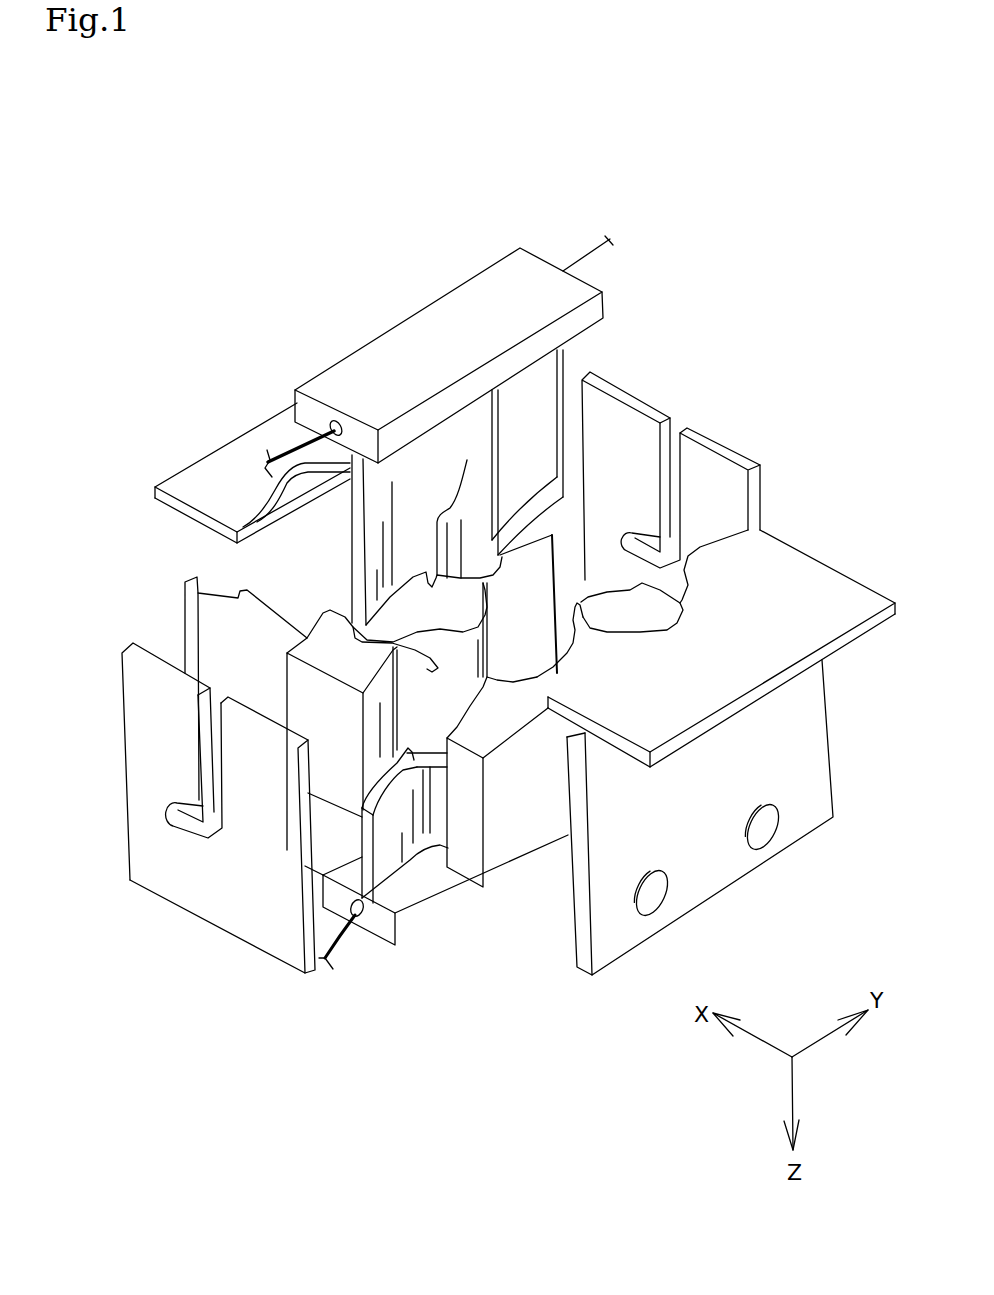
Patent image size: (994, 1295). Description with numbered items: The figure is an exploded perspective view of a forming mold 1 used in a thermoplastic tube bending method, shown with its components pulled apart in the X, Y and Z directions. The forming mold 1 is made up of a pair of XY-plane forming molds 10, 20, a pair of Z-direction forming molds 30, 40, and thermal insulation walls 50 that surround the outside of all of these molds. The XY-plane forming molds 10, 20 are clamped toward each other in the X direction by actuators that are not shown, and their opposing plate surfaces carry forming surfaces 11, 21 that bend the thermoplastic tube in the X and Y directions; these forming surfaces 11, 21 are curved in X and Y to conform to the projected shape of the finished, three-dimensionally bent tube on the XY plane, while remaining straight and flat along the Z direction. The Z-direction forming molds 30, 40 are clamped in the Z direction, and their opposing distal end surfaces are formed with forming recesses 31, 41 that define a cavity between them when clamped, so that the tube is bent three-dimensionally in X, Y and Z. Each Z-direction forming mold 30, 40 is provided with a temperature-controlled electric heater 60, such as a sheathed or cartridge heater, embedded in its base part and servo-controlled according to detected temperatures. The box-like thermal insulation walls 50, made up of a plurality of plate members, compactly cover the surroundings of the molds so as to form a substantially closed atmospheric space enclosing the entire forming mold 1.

The forming mold 1 is at (146, 389).
The XY-plane forming mold 10 is at (313, 704).
The forming surface 11 is at (341, 708).
The XY-plane forming mold 20 is at (597, 748).
The forming surface 21 is at (591, 648).
The Z-direction forming mold 30 is at (445, 944).
The forming recess 31 is at (424, 874).
The Z-direction forming mold 40 is at (454, 317).
The forming recess 41 is at (457, 487).
The thermal insulation wall 50 is at (513, 648).
The electric heater 60 is at (319, 634).